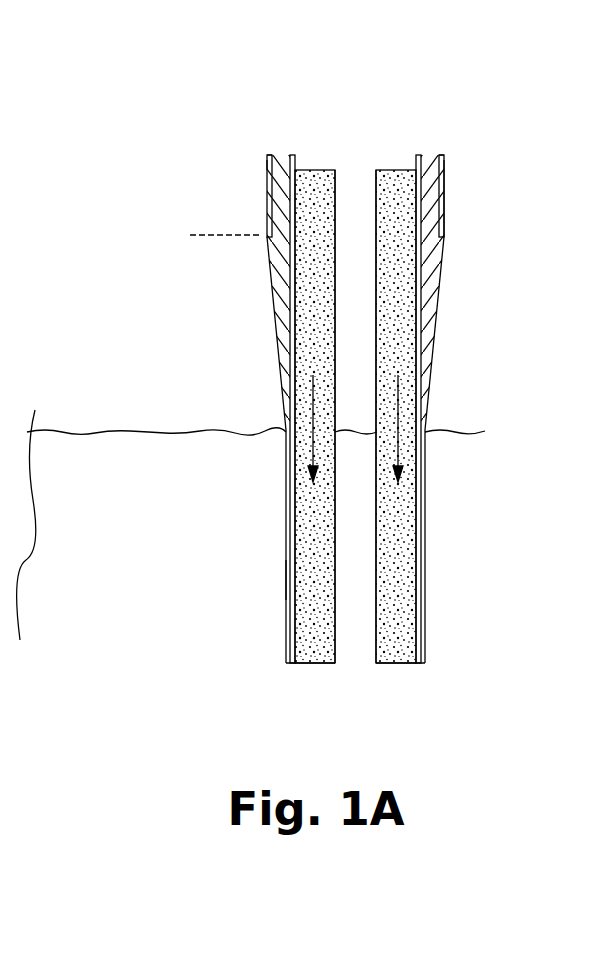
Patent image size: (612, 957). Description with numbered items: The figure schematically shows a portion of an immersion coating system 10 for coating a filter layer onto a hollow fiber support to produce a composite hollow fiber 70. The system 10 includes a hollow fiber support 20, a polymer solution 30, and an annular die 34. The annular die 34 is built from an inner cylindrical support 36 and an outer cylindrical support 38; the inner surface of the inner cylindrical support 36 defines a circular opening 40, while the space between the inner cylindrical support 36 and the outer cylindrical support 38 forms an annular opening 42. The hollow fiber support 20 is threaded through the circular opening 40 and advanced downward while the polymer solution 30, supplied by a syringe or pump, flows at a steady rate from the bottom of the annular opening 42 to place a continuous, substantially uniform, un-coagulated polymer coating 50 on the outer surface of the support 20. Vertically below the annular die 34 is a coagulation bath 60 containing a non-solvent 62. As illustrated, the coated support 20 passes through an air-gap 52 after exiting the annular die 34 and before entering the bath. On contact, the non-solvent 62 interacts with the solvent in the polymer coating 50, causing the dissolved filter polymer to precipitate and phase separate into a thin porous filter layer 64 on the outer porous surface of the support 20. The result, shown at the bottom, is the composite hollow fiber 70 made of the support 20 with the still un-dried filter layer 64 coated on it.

The system 10 is at (120, 162).
The hollow fiber support 20 is at (386, 175).
The polymer solution 30 is at (283, 158).
The annular die 34 is at (465, 209).
The inner cylindrical support 36 is at (293, 153).
The outer cylindrical support 38 is at (267, 159).
The circular opening 40 is at (337, 138).
The annular opening 42 is at (260, 133).
The polymer coating 50 is at (272, 280).
The air-gap 52 is at (203, 250).
The coagulation bath 60 is at (179, 503).
The non-solvent 62 is at (473, 508).
The filter layer 64 is at (272, 585).
The composite hollow fiber 70 is at (441, 686).